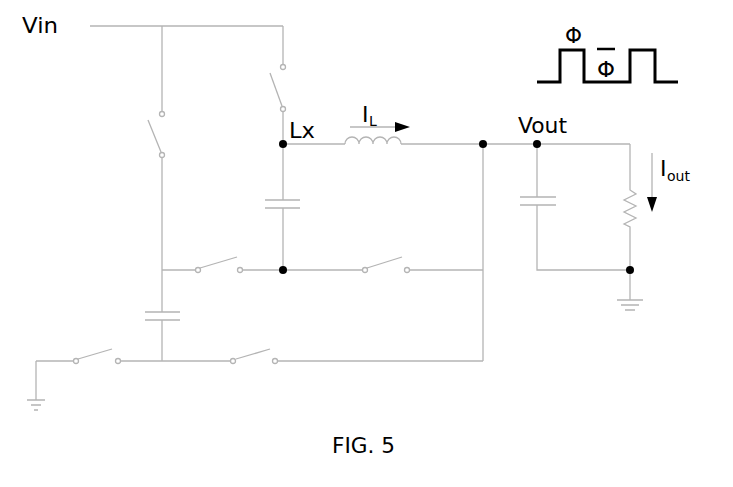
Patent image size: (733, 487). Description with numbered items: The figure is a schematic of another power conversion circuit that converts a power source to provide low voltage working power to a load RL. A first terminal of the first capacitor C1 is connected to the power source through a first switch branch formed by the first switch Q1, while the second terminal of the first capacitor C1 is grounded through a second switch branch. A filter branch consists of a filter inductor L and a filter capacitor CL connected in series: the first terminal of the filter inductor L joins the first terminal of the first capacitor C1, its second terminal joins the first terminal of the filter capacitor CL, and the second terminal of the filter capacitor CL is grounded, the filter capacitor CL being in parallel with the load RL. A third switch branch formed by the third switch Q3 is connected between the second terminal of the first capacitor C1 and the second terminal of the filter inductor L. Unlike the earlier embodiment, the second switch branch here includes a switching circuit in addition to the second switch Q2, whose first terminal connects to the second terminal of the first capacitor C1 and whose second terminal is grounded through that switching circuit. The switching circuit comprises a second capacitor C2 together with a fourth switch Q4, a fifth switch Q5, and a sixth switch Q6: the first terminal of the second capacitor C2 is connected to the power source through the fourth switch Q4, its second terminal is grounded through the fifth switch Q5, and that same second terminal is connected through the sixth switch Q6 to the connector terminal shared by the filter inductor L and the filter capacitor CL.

The first switch Q1 is at (264, 85).
The second switch Q2 is at (222, 280).
The third switch Q3 is at (383, 280).
The fourth switch Q4 is at (138, 169).
The fifth switch Q5 is at (133, 371).
The sixth switch Q6 is at (357, 372).
The first capacitor C1 is at (296, 207).
The second capacitor C2 is at (174, 332).
The filter inductor L is at (456, 161).
The filter capacitor CL is at (575, 207).
The load RL is at (613, 207).